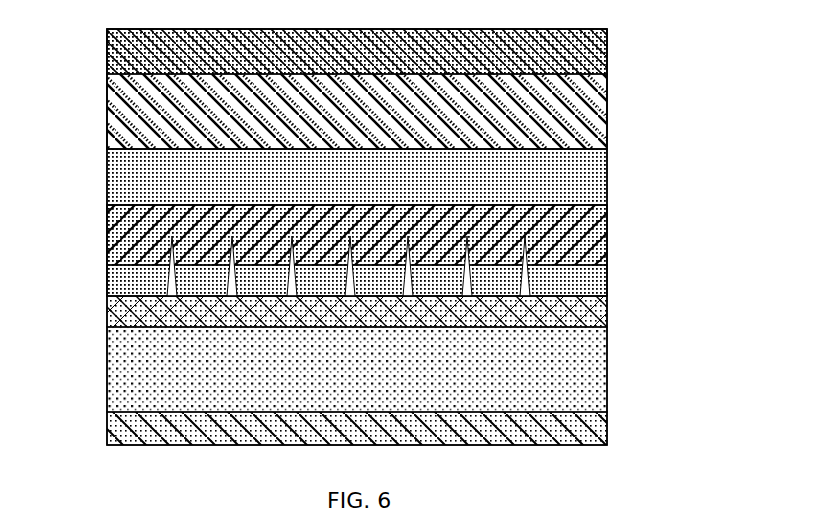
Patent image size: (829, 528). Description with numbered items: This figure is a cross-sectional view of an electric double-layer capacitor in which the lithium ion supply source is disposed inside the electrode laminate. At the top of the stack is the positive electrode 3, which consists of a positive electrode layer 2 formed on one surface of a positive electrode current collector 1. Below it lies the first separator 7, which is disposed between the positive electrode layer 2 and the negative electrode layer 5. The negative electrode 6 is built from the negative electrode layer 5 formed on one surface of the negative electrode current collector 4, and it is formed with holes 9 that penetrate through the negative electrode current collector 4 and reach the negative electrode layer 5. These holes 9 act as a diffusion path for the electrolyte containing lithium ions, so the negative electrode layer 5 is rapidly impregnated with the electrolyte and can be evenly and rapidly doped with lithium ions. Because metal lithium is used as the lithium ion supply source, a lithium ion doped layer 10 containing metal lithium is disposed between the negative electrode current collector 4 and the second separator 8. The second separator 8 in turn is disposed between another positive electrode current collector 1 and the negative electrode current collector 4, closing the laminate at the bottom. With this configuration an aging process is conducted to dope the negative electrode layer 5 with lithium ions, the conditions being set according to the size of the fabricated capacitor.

The positive electrode current collector 1 is at (608, 57).
The positive electrode layer 2 is at (608, 118).
The positive electrode 3 is at (721, 4).
The negative electrode current collector 4 is at (608, 278).
The negative electrode layer 5 is at (608, 240).
The negative electrode 6 is at (717, 183).
The first separator 7 is at (608, 185).
The second separator 8 is at (608, 365).
The holes 9 is at (170, 298).
The lithium ion doped layer 10 is at (608, 312).